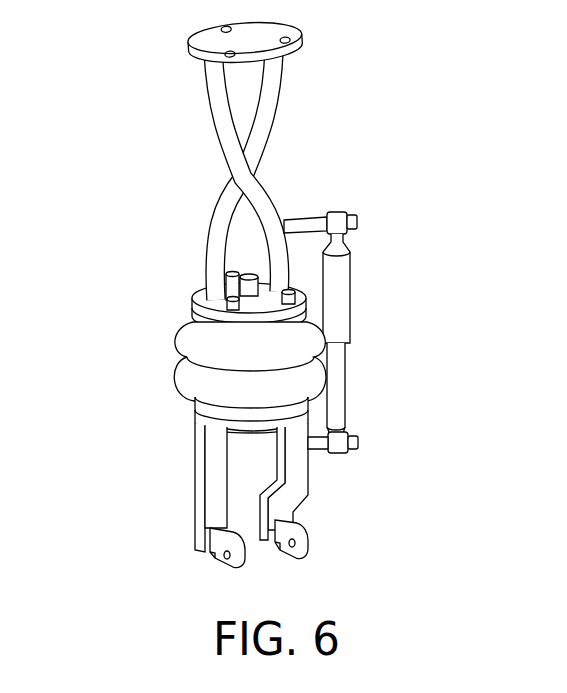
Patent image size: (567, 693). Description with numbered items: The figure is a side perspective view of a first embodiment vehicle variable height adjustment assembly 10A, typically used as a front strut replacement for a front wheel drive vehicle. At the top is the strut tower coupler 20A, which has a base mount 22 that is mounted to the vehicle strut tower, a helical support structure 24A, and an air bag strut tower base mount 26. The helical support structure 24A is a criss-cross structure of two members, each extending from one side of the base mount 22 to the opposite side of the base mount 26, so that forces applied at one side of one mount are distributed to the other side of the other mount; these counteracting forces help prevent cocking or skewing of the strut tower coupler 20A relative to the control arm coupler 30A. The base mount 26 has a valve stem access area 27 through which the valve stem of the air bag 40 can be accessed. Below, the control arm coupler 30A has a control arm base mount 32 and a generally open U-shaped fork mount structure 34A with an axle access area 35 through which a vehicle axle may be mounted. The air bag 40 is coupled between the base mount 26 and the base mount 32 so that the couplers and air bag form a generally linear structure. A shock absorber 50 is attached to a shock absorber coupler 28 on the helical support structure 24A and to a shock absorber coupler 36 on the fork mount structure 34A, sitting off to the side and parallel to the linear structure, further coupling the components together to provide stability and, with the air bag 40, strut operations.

The vehicle variable height adjustment assembly 10A is at (135, 106).
The strut tower coupler 20A is at (301, 76).
The base mount 22 is at (272, 33).
The helical support structure 24A is at (257, 167).
The air bag strut tower base mount 26 is at (197, 290).
The valve stem access area 27 is at (240, 292).
The shock absorber coupler 28 is at (305, 226).
The control arm coupler 30A is at (188, 539).
The control arm base mount 32 is at (201, 424).
The fork mount structure 34A is at (214, 497).
The axle access area 35 is at (252, 472).
The shock absorber coupler 36 is at (318, 447).
The air bag 40 is at (197, 376).
The shock absorber 50 is at (341, 300).